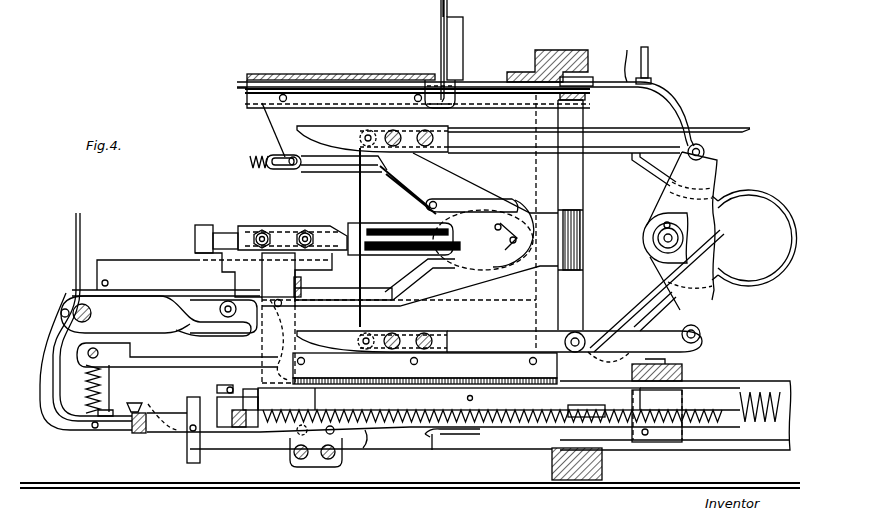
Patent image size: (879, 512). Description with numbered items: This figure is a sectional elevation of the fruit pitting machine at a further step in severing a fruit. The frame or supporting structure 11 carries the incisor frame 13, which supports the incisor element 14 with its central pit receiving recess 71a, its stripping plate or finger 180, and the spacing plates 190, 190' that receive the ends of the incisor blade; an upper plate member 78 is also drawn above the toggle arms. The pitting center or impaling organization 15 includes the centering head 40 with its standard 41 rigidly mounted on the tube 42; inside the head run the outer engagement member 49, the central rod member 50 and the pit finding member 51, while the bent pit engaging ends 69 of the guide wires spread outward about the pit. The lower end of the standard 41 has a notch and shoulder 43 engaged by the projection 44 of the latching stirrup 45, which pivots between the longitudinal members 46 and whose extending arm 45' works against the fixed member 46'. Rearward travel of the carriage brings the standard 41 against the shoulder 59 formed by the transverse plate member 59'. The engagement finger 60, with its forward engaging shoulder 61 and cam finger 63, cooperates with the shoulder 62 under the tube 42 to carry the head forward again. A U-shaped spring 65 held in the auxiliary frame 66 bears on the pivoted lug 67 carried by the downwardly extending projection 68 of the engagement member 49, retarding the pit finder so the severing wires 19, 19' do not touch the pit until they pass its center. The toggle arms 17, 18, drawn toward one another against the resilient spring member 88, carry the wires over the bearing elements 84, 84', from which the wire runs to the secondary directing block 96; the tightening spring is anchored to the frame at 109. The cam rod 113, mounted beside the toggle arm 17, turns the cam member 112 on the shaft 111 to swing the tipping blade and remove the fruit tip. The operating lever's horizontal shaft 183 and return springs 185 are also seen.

The frame or supporting structure 11 is at (746, 350).
The incisor frame 13 is at (598, 40).
The incisor element 14 is at (404, 208).
The pitting center or impaling organization 15 is at (254, 208).
The toggle arm 17 is at (619, 147).
The toggle arm 18 is at (606, 355).
The severing wire 19 is at (544, 240).
The severing wire 19' is at (346, 189).
The centering head 40 is at (300, 226).
The standard 41 is at (290, 320).
The tube 42 is at (499, 405).
The notch and shoulder 43 is at (256, 407).
The projection 44 is at (133, 403).
The latching stirrup 45 is at (136, 438).
The extending arm 45' is at (290, 368).
The longitudinal members 46 is at (364, 449).
The fixed member 46' is at (92, 320).
The outer engagement member 49 is at (195, 240).
The central rod member 50 is at (228, 233).
The pit finding member 51 is at (392, 228).
The shoulder 59 is at (281, 318).
The transverse plate member 59' is at (425, 346).
The engagement finger 60 is at (475, 440).
The forward engaging shoulder 61 is at (422, 430).
The shoulder 62 is at (598, 405).
The cam finger 63 is at (430, 451).
The U-shaped spring 65 is at (160, 313).
The auxiliary frame or standard 66 is at (68, 366).
The cam member or pivoted lug 67 is at (237, 311).
The downwardly extending projection 68 is at (219, 311).
The pit engaging end 69 is at (495, 228).
The pit receiving recess 71a is at (505, 225).
The plate 78 is at (237, 98).
The bearing element 84 is at (396, 126).
The bearing element 84' is at (395, 329).
The resilient spring member 88 is at (792, 238).
The secondary directing bearing element or block 96 is at (587, 330).
The spring anchorage 109 is at (262, 428).
The rotatable shaft 111 is at (567, 59).
The cam member 112 is at (649, 52).
The cam rod 113 is at (252, 86).
The plate or finger 180 is at (459, 205).
The horizontal shaft 183 is at (328, 460).
The springs 185 is at (292, 462).
The spacing plate 190 is at (343, 283).
The spacing plate 190' is at (318, 179).